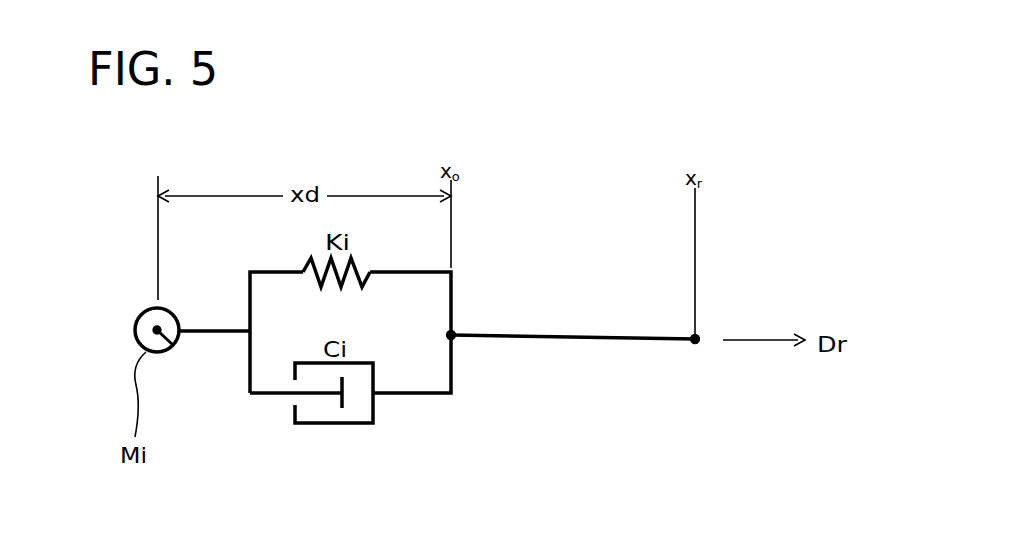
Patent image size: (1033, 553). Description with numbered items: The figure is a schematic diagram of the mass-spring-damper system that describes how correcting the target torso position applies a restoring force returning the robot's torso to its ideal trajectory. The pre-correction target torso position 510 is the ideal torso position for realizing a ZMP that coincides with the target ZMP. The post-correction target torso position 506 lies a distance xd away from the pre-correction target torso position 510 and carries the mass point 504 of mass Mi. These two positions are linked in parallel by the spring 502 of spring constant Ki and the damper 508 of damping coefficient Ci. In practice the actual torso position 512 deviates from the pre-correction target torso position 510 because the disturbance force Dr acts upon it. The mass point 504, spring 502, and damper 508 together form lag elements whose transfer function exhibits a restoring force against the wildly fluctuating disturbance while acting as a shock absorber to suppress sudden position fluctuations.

The spring 502 is at (356, 262).
The mass point 504 is at (158, 308).
The post-correction target torso position 506 is at (171, 352).
The damper 508 is at (333, 424).
The pre-correction target torso position 510 is at (454, 338).
The actual torso position 512 is at (695, 344).